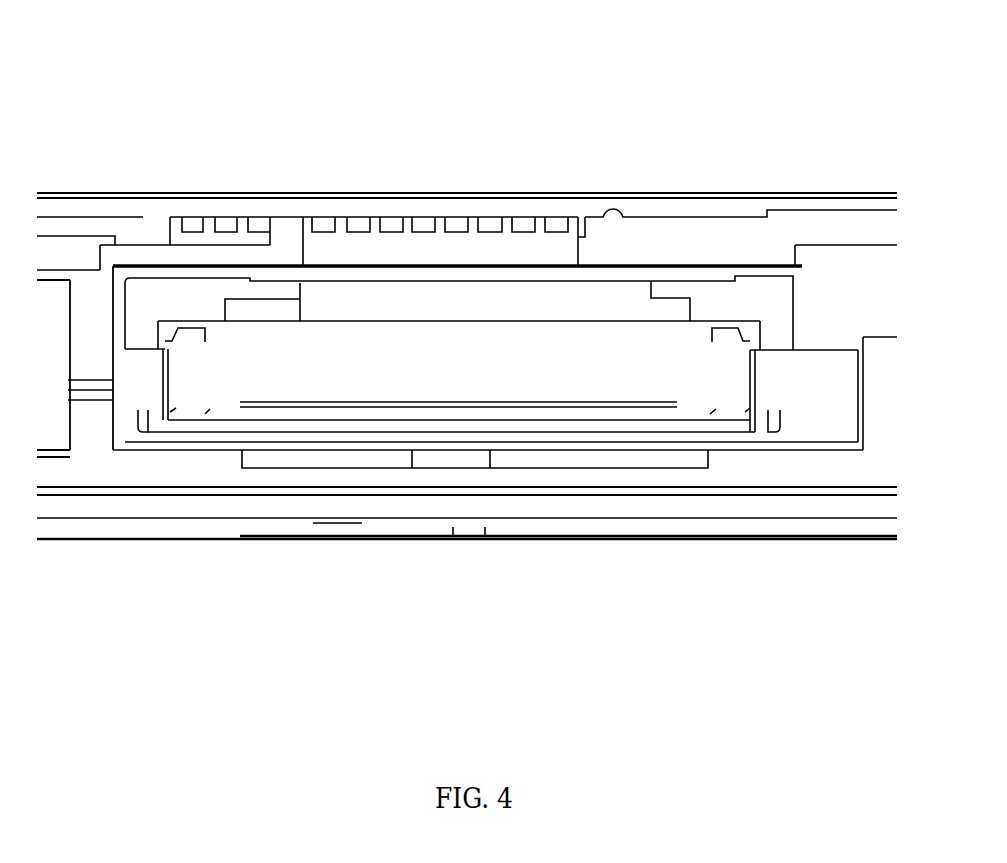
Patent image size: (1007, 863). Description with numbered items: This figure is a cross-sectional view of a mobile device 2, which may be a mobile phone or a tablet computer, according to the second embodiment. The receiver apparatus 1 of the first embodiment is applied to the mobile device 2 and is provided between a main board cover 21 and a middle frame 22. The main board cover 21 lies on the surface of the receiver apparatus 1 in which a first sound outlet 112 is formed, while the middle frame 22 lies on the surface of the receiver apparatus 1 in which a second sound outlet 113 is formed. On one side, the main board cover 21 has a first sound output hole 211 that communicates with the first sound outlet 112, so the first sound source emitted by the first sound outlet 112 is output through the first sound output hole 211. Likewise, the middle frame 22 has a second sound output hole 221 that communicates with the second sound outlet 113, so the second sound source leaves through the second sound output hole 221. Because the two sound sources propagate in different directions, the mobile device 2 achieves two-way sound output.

The receiver apparatus 1 is at (710, 278).
The mobile device 2 is at (674, 138).
The main board cover 21 is at (844, 466).
The middle frame 22 is at (832, 237).
The first sound outlet 112 is at (187, 432).
The second sound outlet 113 is at (368, 297).
The first sound output hole 211 is at (683, 525).
The second sound output hole 221 is at (462, 223).